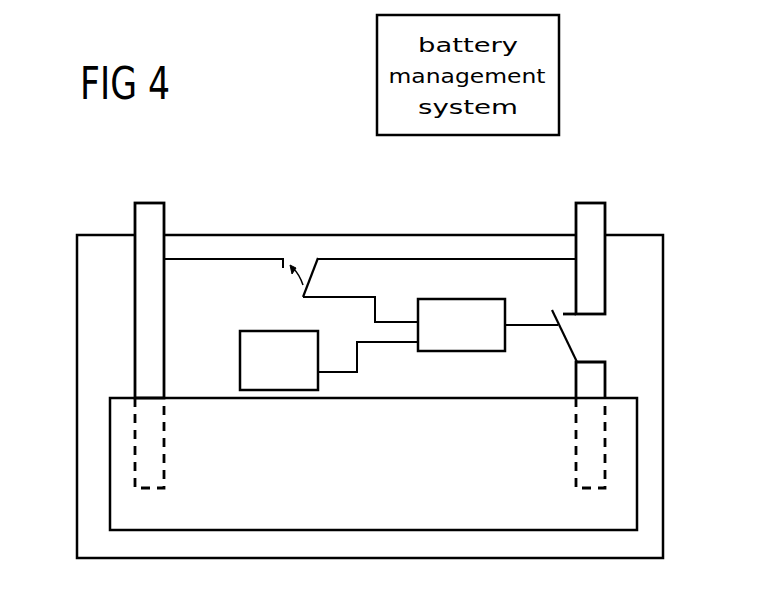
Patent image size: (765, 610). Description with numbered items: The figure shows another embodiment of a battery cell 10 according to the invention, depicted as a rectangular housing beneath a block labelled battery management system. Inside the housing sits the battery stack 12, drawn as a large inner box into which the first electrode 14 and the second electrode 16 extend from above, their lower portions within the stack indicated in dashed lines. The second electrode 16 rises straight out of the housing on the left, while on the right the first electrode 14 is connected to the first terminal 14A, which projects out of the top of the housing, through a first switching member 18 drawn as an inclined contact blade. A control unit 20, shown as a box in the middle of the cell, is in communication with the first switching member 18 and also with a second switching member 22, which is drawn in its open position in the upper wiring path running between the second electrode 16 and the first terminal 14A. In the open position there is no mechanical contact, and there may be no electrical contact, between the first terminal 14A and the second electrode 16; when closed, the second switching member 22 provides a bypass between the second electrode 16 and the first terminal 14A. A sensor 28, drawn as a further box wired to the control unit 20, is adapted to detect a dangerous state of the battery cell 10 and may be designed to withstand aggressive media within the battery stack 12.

The battery cell 10 is at (346, 234).
The battery stack 12 is at (195, 397).
The first electrode 14 is at (598, 360).
The first terminal 14A is at (588, 202).
The second electrode 16 is at (146, 202).
The first switching member 18 is at (567, 348).
The control unit 20 is at (417, 349).
The second switching member 22 is at (311, 278).
The sensor 28 is at (252, 330).